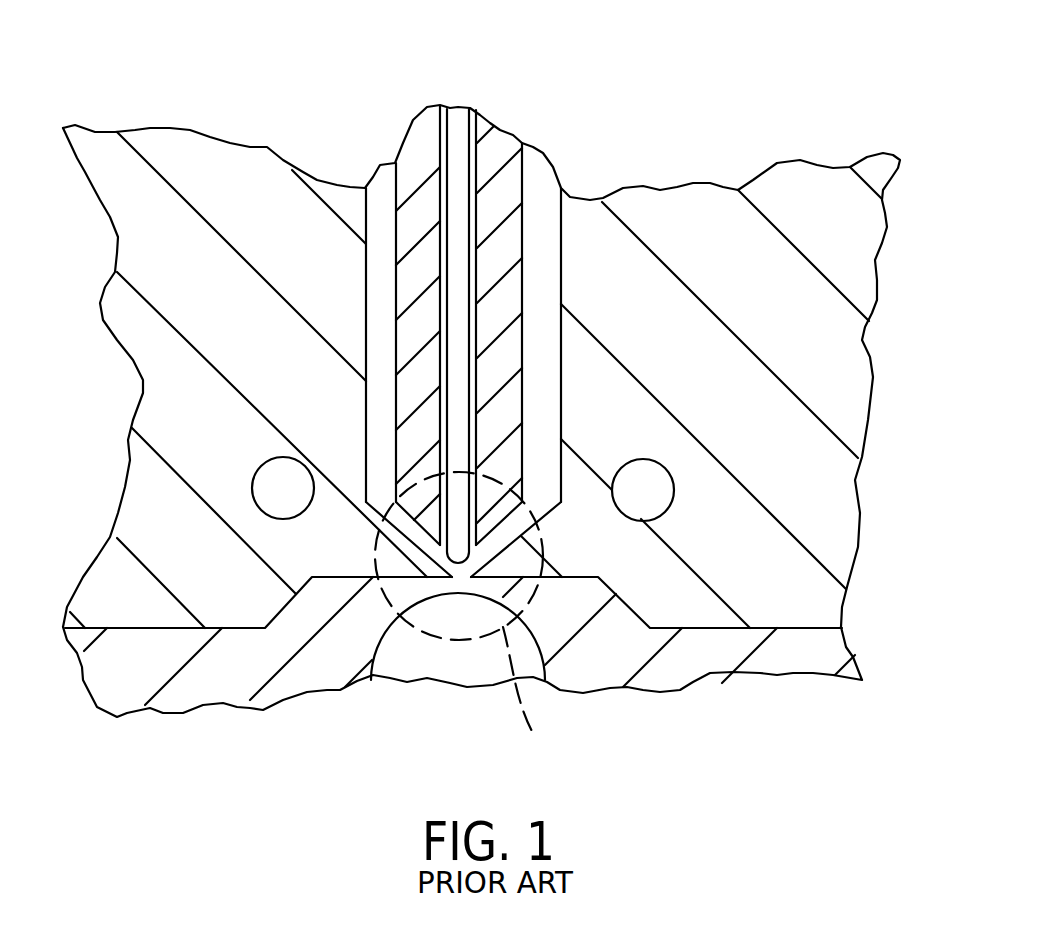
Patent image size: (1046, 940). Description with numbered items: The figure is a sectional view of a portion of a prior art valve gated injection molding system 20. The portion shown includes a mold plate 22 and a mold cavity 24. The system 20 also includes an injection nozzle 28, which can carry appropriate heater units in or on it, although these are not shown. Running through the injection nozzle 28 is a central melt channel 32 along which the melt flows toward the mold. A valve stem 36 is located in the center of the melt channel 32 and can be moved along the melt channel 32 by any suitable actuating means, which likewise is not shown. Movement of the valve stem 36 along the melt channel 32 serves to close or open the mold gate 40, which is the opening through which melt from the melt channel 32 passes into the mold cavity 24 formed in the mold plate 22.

The injection molding system 20 is at (802, 104).
The mold plate 22 is at (746, 403).
The mold cavity 24 is at (840, 653).
The injection nozzle 28 is at (503, 193).
The central melt channel 32 is at (443, 118).
The valve stem 36 is at (462, 140).
The mold gate 40 is at (460, 578).